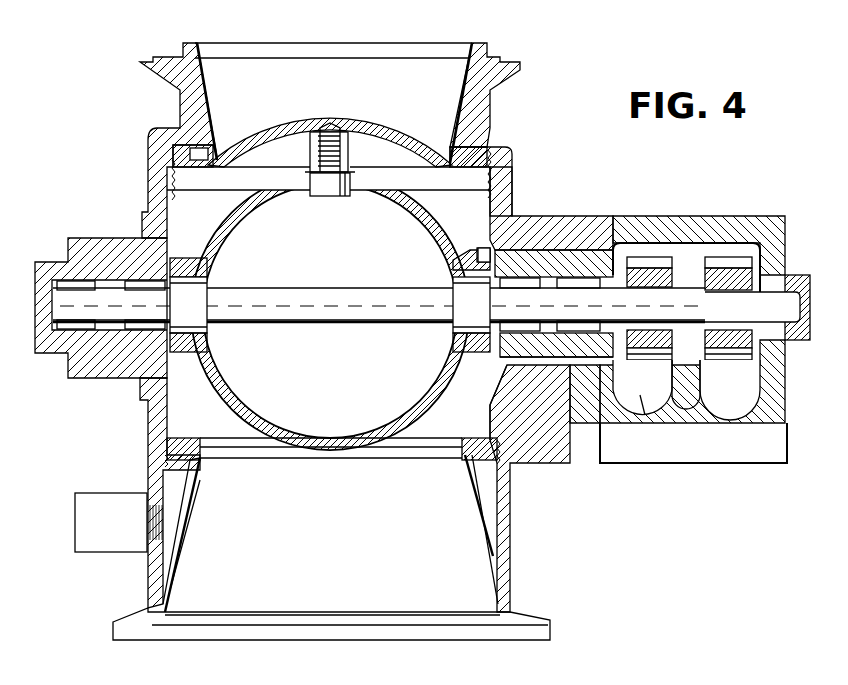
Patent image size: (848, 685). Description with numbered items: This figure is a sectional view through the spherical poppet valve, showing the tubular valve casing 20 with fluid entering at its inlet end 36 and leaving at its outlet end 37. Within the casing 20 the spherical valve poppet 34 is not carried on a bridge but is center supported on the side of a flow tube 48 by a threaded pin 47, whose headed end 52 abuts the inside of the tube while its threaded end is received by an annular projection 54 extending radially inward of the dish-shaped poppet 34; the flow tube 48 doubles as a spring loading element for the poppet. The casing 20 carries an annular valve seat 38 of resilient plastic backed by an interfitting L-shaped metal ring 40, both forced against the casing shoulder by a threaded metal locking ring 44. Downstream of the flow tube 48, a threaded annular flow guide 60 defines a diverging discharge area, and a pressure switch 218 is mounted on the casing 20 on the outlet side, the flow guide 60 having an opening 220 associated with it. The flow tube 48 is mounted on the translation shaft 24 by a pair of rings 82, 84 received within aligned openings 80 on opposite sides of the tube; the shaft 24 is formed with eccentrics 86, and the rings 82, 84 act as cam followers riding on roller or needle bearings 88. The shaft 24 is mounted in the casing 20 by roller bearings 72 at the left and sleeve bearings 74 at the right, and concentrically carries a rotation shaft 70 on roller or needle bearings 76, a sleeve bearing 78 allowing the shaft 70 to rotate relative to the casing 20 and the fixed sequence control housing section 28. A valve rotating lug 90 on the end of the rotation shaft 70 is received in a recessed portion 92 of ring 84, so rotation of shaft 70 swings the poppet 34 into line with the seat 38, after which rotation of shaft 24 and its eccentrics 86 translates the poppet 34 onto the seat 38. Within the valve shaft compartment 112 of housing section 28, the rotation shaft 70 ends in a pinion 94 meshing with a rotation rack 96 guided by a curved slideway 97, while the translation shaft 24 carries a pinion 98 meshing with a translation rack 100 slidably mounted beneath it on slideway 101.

The valve casing 20 is at (513, 200).
The translation shaft 24 is at (378, 322).
The sequence control mechanism housing section 28 is at (719, 218).
The spherical valve poppet 34 is at (345, 130).
The inlet end 36 is at (200, 50).
The outlet end 37 is at (238, 630).
The annular valve seat 38 is at (203, 160).
The L-shaped metal ring 40 is at (483, 155).
The metal locking ring 44 is at (498, 172).
The threaded pin 47 is at (352, 148).
The flow tube 48 is at (345, 190).
The headed end 52 is at (317, 190).
The annular projection 54 is at (315, 143).
The annular flow guide 60 is at (196, 470).
The rotation shaft 70 is at (557, 256).
The roller bearings 72 is at (125, 255).
The sleeve bearings 74 is at (800, 275).
The roller or needle bearings 76 is at (503, 366).
The sleeve bearing 78 is at (495, 404).
The openings 80 is at (210, 340).
The ring 82 is at (210, 263).
The ring 84 is at (455, 258).
The eccentrics 86 is at (206, 287).
The roller or needle bearings 88 is at (208, 328).
The valve rotating lug 90 is at (513, 215).
The recessed portion 92 is at (483, 250).
The pinion 94 is at (655, 357).
The rotation rack 96 is at (642, 405).
The curved slideway 97 is at (662, 418).
The pinion 98 is at (733, 357).
The translation rack 100 is at (745, 393).
The slideway 101 is at (735, 430).
The valve shaft compartment 112 is at (697, 240).
The pressure switch 218 is at (108, 545).
The opening 220 is at (198, 508).